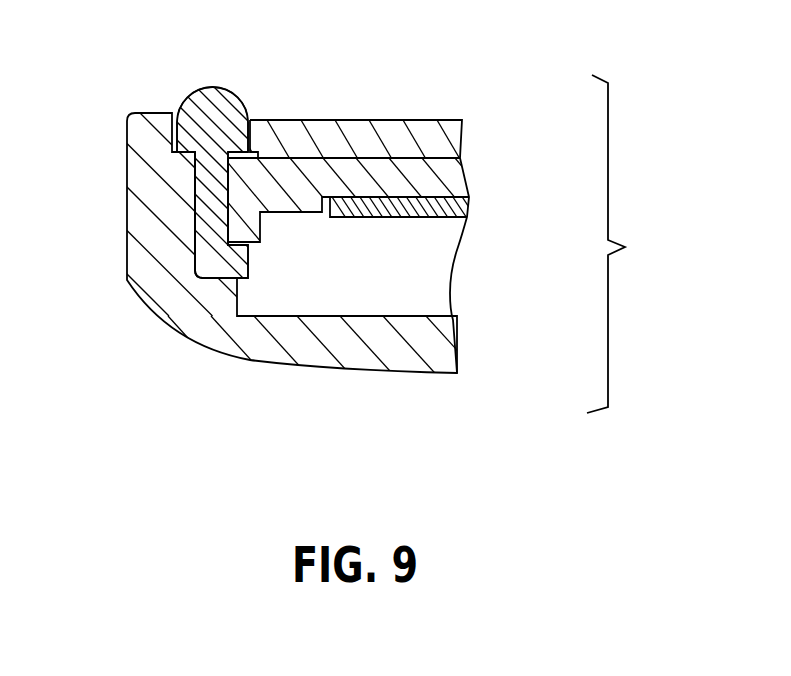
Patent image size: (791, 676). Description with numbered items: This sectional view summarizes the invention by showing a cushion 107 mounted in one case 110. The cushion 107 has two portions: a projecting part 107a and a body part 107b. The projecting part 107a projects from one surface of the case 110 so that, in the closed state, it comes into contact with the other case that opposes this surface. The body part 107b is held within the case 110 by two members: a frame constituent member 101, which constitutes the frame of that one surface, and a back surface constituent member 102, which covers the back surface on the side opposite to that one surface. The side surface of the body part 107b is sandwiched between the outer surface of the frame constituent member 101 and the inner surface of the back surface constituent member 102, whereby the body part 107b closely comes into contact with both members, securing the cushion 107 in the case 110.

The frame constituent member 101 is at (452, 180).
The back surface constituent member 102 is at (188, 309).
The cushion 107 is at (202, 88).
The projecting part 107a is at (247, 103).
The body part 107b is at (207, 215).
The one case 110 is at (684, 259).